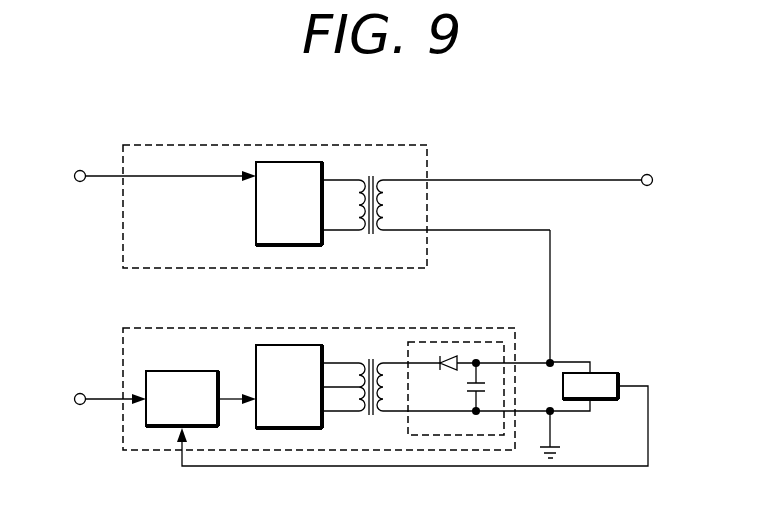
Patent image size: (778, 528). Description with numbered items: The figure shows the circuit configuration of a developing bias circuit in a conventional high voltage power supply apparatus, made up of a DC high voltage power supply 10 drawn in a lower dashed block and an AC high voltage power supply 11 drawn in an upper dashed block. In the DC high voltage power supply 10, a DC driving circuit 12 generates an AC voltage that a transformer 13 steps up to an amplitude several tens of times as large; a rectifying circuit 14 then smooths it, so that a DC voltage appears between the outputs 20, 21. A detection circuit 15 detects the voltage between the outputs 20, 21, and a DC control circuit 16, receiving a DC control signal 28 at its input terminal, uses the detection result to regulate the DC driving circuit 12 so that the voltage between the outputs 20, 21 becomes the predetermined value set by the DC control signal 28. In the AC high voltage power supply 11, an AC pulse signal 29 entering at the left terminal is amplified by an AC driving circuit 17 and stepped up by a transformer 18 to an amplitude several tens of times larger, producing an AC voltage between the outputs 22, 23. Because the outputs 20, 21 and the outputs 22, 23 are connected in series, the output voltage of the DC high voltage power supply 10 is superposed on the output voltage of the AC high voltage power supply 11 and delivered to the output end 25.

The DC high voltage power supply 10 is at (143, 452).
The AC high voltage power supply 11 is at (385, 145).
The DC driving circuit 12 is at (322, 420).
The transformer 13 is at (371, 417).
The rectifying circuit 14 is at (456, 436).
The detection circuit 15 is at (600, 372).
The DC control circuit 16 is at (200, 371).
The AC driving circuit 17 is at (322, 235).
The transformer 18 is at (371, 235).
The output 20 is at (533, 350).
The output 21 is at (527, 415).
The output 22 is at (453, 180).
The output 23 is at (452, 233).
The output end 25 is at (648, 187).
The DC control signal 28 is at (80, 393).
The AC pulse signal 29 is at (80, 170).